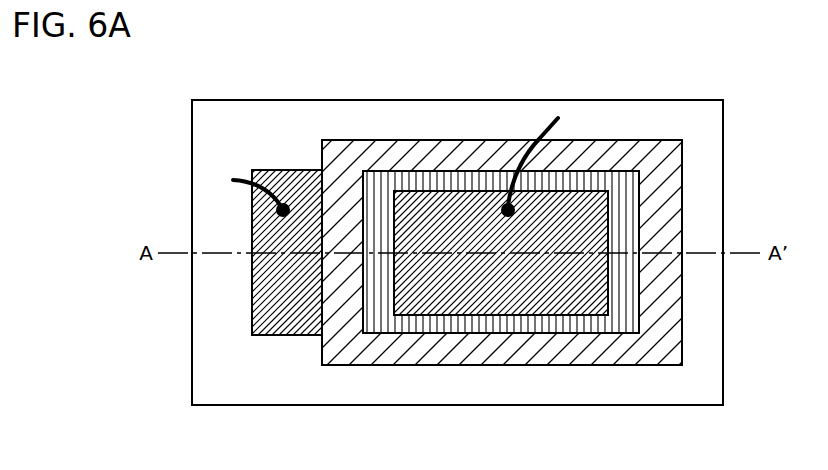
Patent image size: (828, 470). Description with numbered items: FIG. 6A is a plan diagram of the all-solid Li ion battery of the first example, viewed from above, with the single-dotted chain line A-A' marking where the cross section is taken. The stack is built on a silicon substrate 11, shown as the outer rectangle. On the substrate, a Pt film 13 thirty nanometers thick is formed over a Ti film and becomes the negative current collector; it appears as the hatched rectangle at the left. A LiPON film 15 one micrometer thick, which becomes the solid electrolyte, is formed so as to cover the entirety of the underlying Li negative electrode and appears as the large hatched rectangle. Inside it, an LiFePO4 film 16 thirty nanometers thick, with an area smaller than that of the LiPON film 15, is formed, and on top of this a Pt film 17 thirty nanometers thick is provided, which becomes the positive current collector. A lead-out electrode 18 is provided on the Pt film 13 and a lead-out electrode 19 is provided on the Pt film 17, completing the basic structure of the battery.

The silicon substrate 11 is at (402, 388).
The Pt film 13 is at (292, 315).
The LiPON film 15 is at (480, 350).
The LiFePO4 film 16 is at (528, 323).
The Pt film 17 is at (580, 300).
The lead-out electrode 18 is at (243, 178).
The lead-out electrode 19 is at (540, 135).